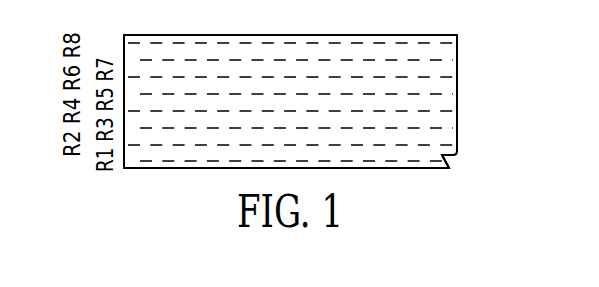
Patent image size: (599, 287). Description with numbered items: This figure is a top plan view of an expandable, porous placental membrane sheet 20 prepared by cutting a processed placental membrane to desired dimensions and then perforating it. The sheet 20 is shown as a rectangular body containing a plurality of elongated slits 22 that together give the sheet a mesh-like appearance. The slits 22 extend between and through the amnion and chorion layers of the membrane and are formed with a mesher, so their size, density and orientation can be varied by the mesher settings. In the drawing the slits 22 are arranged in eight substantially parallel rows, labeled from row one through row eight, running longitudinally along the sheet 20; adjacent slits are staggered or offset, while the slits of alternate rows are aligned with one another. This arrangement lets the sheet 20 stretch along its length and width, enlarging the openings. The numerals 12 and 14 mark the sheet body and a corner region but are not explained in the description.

The placental membrane sheet 20 is at (352, 100).
The elongated slits 22 is at (158, 43).
The sheet body 12 is at (446, 100).
The folded corner 14 is at (448, 164).